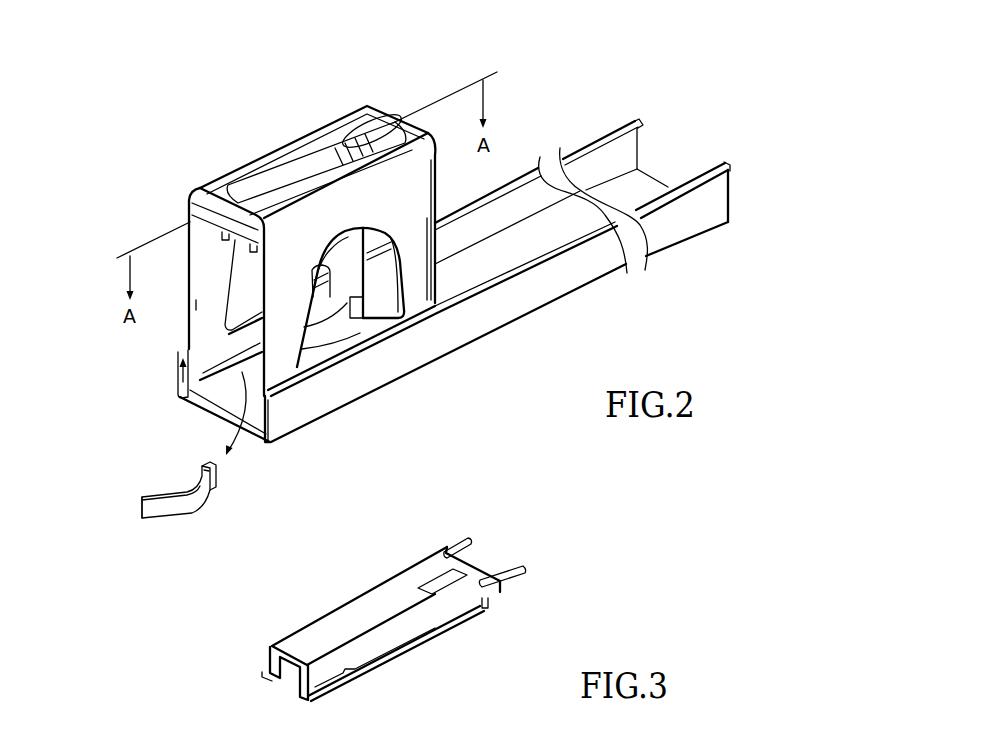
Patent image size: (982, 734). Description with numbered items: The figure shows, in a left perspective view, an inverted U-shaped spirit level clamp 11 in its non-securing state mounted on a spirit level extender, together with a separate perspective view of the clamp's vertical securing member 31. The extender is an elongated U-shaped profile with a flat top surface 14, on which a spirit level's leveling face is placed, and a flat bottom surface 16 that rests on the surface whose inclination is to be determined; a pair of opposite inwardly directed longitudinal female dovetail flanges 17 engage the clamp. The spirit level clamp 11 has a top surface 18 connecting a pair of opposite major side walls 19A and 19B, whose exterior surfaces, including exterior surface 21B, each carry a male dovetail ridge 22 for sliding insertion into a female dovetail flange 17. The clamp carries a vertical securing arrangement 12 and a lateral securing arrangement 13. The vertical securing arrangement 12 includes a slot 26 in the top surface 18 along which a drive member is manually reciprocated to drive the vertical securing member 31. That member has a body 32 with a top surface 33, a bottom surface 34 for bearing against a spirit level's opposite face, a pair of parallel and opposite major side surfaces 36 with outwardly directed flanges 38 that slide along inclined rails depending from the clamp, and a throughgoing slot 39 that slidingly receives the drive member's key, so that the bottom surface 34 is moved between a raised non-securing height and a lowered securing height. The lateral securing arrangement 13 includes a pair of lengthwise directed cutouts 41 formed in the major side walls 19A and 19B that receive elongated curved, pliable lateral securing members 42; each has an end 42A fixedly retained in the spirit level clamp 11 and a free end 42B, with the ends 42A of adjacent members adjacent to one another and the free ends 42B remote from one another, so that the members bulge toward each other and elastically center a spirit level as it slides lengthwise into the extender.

In FIG. 2, the spirit level clamp 11 is at (410, 65).
In FIG. 2, the vertical securing arrangement 12 is at (330, 68).
In FIG. 2, the lateral securing arrangement 13 is at (232, 408).
In FIG. 2, the top surface 14 is at (213, 403).
In FIG. 2, the bottom surface 16 is at (467, 348).
In FIG. 2, the female dovetail flange 17 is at (178, 348).
In FIG. 2, the top surface 18 is at (217, 192).
In FIG. 2, the major side wall 19A is at (208, 290).
In FIG. 2, the major side wall 19B is at (403, 205).
In FIG. 2, the exterior surface 21B is at (420, 280).
In FIG. 2, the male dovetail ridge 22 is at (182, 372).
In FIG. 2, the slot 26 is at (305, 180).
In FIG. 2, the cutout 41 is at (355, 317).
In FIG. 2, the lateral securing member 42 is at (340, 315).
In FIG. 2, the end 42A is at (217, 475).
In FIG. 2, the free end 42B is at (142, 507).
In FIG. 3, the vertical securing member 31 is at (520, 541).
In FIG. 3, the body 32 is at (305, 643).
In FIG. 3, the top surface 33 is at (357, 613).
In FIG. 3, the bottom surface 34 is at (430, 637).
In FIG. 3, the major side surface 36 is at (373, 637).
In FIG. 3, the flange 38 is at (413, 640).
In FIG. 3, the throughgoing slot 39 is at (440, 578).